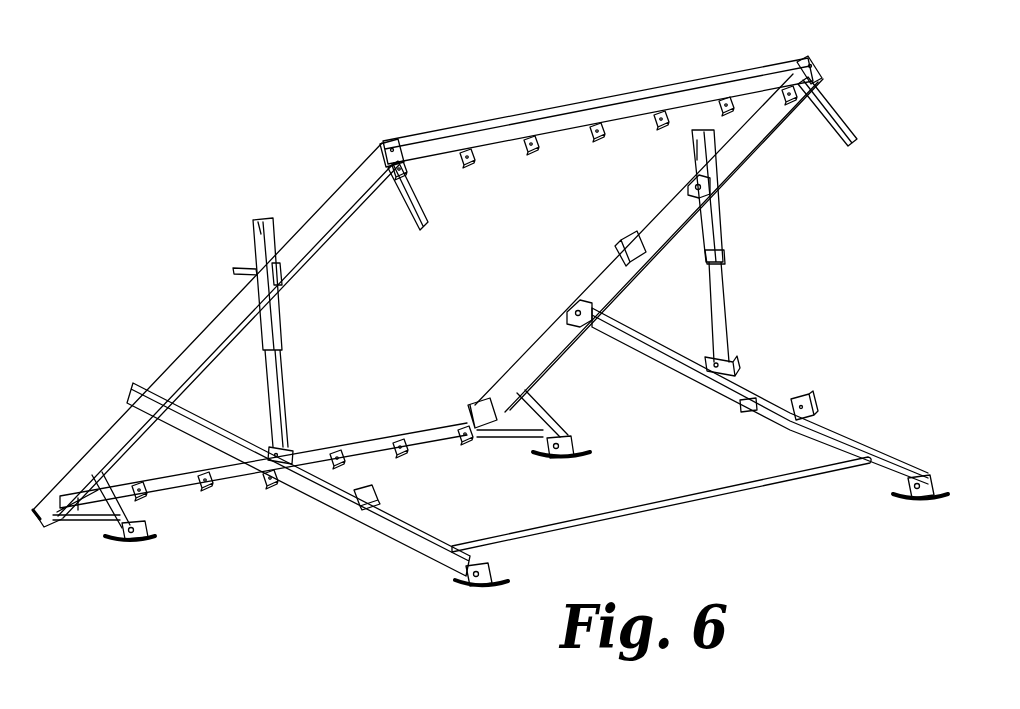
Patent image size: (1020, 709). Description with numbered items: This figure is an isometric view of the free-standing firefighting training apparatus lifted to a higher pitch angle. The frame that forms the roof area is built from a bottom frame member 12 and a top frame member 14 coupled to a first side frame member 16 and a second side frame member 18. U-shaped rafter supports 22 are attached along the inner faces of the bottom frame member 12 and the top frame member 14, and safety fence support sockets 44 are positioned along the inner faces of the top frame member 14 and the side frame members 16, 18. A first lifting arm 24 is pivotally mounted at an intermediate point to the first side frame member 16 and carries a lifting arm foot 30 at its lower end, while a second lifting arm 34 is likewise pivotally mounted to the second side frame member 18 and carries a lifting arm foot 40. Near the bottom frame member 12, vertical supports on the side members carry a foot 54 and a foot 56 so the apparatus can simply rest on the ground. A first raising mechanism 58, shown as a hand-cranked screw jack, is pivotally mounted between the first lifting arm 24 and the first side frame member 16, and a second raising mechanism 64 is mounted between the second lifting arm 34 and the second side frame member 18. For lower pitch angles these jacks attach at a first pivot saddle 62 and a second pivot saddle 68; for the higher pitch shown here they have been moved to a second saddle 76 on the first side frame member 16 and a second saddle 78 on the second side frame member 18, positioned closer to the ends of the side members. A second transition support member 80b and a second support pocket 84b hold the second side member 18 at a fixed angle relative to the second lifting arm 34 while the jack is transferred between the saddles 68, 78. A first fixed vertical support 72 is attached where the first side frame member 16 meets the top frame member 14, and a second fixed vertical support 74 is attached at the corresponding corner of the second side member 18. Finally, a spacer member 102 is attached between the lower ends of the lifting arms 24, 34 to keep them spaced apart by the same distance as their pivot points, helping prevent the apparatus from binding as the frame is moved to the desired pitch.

The bottom frame member 12 is at (370, 446).
The top frame member 14 is at (561, 117).
The first side frame member 16 is at (533, 363).
The second side frame member 18 is at (340, 200).
The rafter supports 22 is at (407, 172).
The first lifting arm 24 is at (730, 388).
The lifting arm foot 30 is at (918, 500).
The second lifting arm 34 is at (190, 426).
The lifting arm foot 40 is at (470, 588).
The safety fence support sockets 44 is at (620, 240).
The foot 54 is at (565, 458).
The foot 56 is at (128, 543).
The first raising mechanism 58 is at (717, 237).
The first pivot saddle 62 is at (815, 405).
The second raising mechanism 64 is at (283, 328).
The second pivot saddle 68 is at (380, 497).
The first fixed vertical support 72 is at (840, 120).
The second fixed vertical support 74 is at (397, 220).
The second saddle 76 is at (735, 366).
The second saddle 78 is at (290, 449).
The second transition support member 80b is at (690, 258).
The second support pocket 84b is at (748, 412).
The spacer member 102 is at (803, 478).